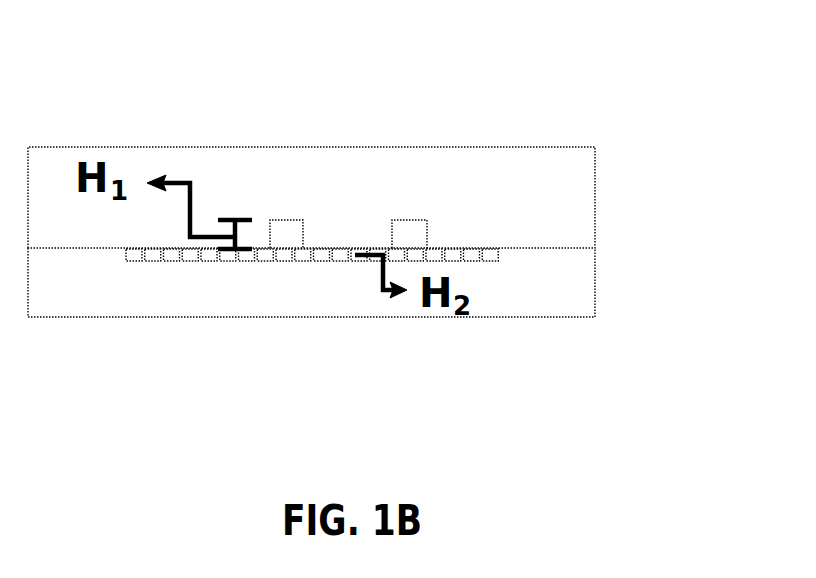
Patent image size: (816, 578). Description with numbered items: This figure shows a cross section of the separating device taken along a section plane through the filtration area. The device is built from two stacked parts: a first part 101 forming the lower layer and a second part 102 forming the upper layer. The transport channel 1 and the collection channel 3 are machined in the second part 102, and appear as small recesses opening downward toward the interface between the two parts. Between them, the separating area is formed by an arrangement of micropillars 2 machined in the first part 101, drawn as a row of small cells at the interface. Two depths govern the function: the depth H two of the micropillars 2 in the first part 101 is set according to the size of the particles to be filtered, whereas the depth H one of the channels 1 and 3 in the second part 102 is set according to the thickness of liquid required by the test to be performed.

The transport channel 1 is at (400, 238).
The micropillars 2 is at (335, 255).
The collection channel 3 is at (288, 238).
The first part 101 is at (492, 282).
The second part 102 is at (535, 165).